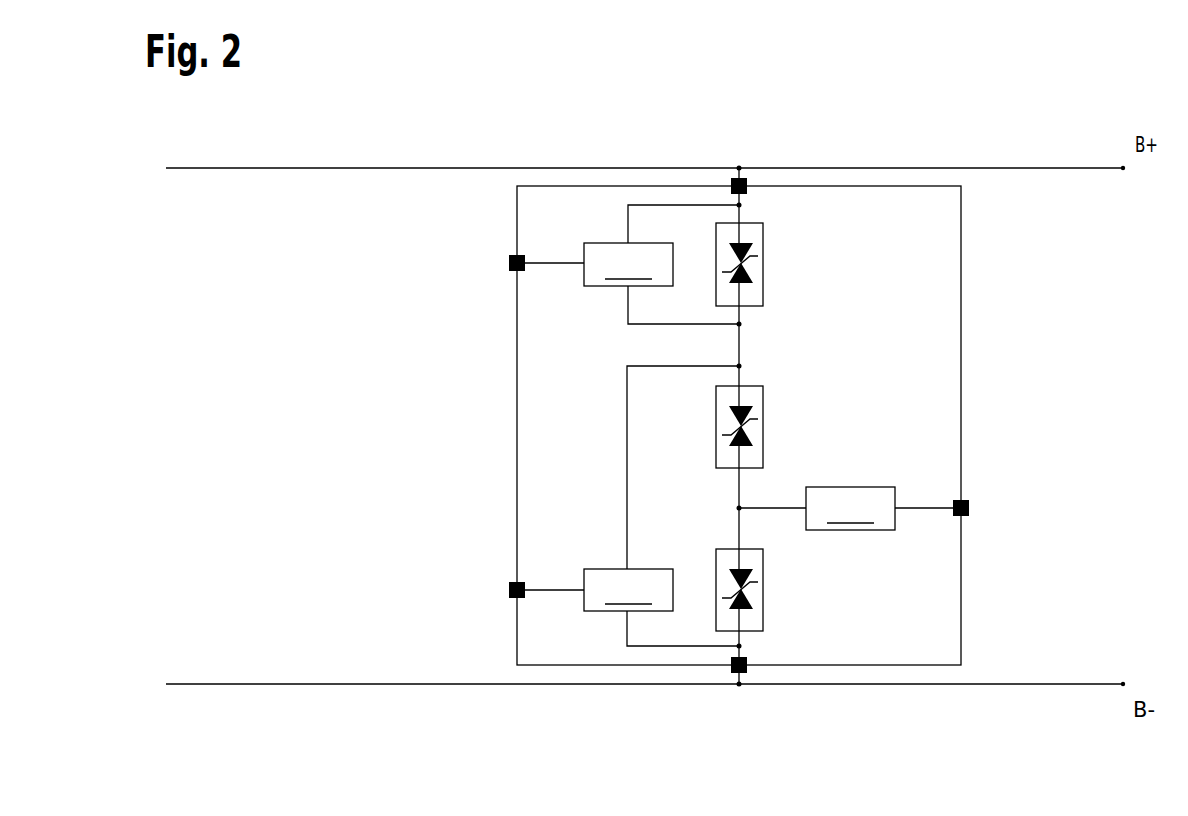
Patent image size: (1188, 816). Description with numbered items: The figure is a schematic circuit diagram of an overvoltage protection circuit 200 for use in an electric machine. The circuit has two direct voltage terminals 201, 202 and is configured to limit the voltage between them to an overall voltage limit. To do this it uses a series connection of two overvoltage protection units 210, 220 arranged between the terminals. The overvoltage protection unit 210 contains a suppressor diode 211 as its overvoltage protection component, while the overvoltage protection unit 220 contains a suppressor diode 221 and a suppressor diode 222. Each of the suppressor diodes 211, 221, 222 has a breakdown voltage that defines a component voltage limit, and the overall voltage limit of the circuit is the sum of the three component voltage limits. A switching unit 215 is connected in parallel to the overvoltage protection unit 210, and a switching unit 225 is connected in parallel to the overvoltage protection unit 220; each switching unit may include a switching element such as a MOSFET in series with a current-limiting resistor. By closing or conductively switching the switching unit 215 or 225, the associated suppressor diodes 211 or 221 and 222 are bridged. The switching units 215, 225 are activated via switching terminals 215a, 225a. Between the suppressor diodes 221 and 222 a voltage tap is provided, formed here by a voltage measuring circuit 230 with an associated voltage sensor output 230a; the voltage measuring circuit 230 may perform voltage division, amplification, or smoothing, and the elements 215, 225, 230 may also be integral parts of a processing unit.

The overvoltage protection circuit 200 is at (961, 262).
The direct voltage terminal 201 is at (745, 182).
The direct voltage terminal 202 is at (742, 670).
The overvoltage protection unit 210 is at (710, 265).
The suppressor diode 211 is at (763, 262).
The switching unit 215 is at (628, 264).
The switching terminal 215a is at (510, 262).
The overvoltage protection unit 220 is at (743, 506).
The suppressor diode 221 is at (763, 427).
The suppressor diode 222 is at (763, 590).
The switching unit 225 is at (628, 590).
The switching terminal 225a is at (510, 589).
The voltage measuring circuit 230 is at (817, 508).
The voltage sensor output 230a is at (968, 508).